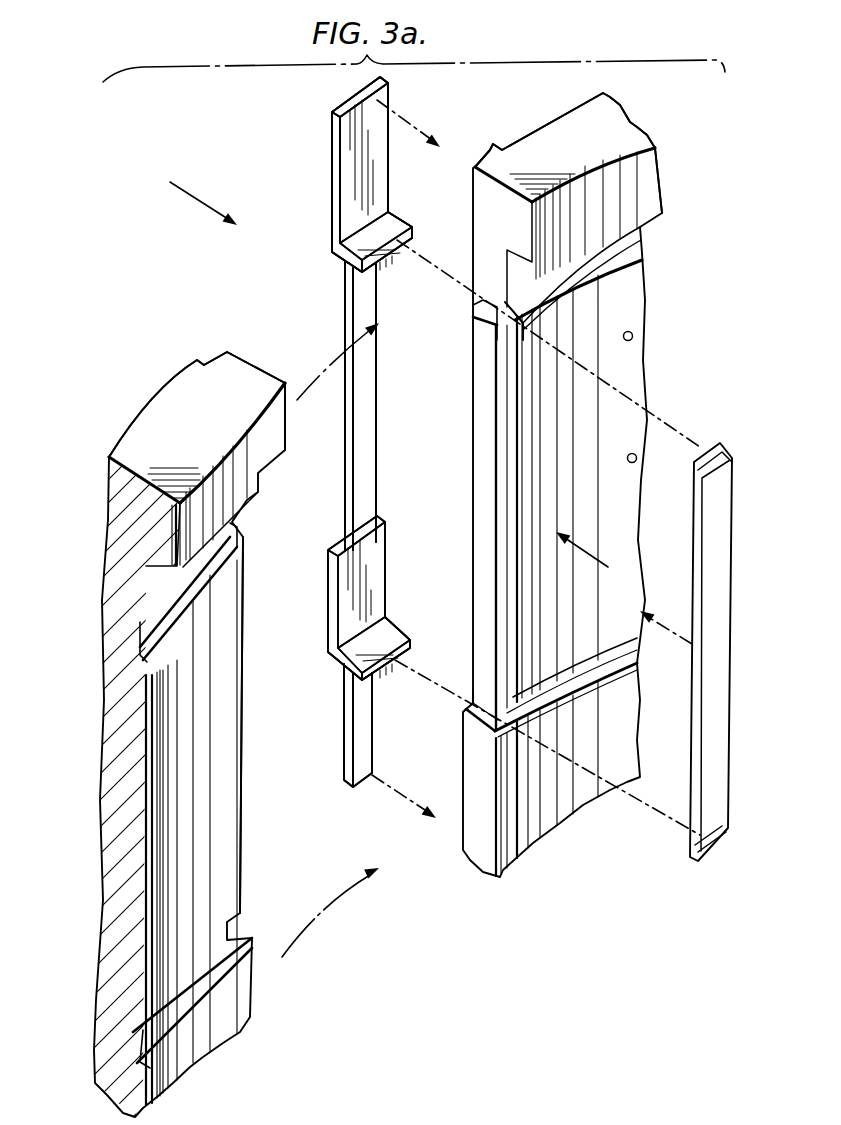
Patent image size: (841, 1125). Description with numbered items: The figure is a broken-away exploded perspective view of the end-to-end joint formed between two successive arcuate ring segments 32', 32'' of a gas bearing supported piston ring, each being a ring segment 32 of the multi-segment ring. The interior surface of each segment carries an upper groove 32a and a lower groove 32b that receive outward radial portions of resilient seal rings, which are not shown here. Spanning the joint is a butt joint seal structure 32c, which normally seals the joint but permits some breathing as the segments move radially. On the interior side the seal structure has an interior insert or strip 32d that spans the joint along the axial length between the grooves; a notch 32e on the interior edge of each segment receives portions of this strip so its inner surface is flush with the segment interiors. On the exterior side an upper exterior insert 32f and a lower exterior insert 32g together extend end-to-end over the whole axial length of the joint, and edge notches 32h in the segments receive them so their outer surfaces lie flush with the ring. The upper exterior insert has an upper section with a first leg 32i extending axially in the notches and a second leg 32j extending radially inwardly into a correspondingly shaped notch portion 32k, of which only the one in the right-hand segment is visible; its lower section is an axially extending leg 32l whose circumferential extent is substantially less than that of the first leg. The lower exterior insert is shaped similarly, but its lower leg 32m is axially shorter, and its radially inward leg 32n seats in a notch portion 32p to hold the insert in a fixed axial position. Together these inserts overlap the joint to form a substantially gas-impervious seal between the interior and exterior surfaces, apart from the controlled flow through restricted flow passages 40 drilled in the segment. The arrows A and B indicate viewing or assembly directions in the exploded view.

The ring segment 32' is at (161, 738).
The ring segment 32'' is at (575, 485).
The ring segment 32 is at (377, 432).
The upper groove 32a is at (140, 642).
The lower groove 32b is at (142, 1035).
The butt joint seal structure 32c is at (296, 122).
The interior insert 32d is at (745, 680).
The notch 32e is at (242, 683).
The upper exterior insert 32f is at (325, 261).
The lower exterior insert 32g is at (320, 607).
The edge notch 32h is at (228, 350).
The first leg 32i is at (334, 194).
The second leg 32j is at (397, 222).
The notch portion 32k is at (474, 312).
The axially extending leg 32l is at (370, 447).
The leg 32m is at (353, 742).
The leg 32n is at (427, 615).
The notch portion 32p is at (463, 710).
The restricted flow passage 40 is at (633, 334).
The direction arrow A is at (203, 192).
The direction arrow B is at (593, 563).